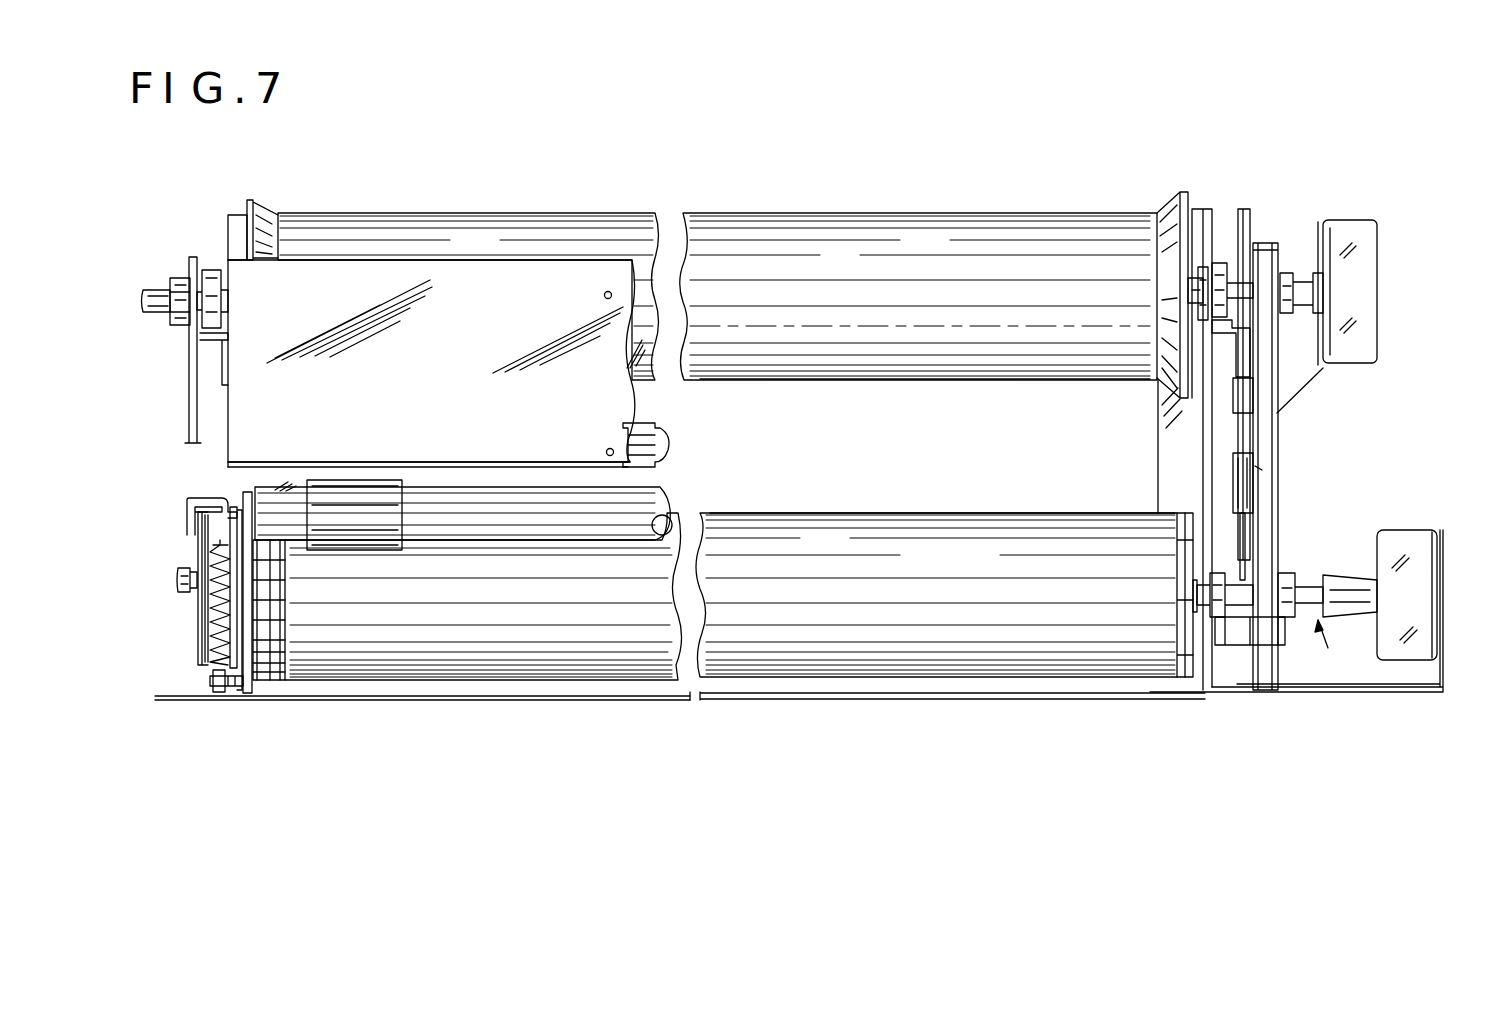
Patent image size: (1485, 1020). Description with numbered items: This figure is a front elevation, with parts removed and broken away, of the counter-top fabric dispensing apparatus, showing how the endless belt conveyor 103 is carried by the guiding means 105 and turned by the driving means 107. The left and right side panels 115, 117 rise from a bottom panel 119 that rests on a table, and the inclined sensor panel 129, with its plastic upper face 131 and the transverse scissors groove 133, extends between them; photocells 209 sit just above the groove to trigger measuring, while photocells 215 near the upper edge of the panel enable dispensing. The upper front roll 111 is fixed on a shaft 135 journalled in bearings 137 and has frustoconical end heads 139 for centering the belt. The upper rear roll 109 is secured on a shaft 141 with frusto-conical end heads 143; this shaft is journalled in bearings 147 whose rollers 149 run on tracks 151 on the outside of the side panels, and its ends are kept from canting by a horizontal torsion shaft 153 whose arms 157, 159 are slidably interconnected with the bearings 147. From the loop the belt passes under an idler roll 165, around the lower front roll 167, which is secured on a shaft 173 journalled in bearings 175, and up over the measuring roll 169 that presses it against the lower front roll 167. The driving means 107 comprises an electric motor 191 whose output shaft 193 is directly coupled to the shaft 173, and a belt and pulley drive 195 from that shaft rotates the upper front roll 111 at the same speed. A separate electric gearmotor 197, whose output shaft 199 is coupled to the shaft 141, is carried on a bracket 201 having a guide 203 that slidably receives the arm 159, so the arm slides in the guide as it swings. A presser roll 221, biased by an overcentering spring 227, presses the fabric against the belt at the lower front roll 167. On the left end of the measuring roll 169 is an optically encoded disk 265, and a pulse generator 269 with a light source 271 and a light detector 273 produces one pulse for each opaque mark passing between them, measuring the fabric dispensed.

The endless belt conveyor 103 is at (497, 656).
The guiding means 105 is at (1043, 680).
The driving means 107 is at (1341, 647).
The upper rear roll 109 is at (663, 220).
The upper front roll 111 is at (936, 382).
The left side panel 115 is at (215, 682).
The right side panel 117 is at (1262, 470).
The bottom panel 119 is at (895, 700).
The sensor panel 129 is at (452, 250).
The plastic upper face 131 is at (452, 366).
The slot or groove 133 is at (455, 459).
The shaft 135 is at (1200, 318).
The bearings 137 is at (1195, 285).
The frustoconical end heads 139 is at (1162, 200).
The shaft 141 is at (140, 298).
The frusto-conical end heads 143 is at (268, 200).
The bearings 147 is at (178, 326).
The rollers 149 is at (210, 268).
The tracks 151 is at (222, 342).
The horizontal torsion shaft 153 is at (1288, 630).
The arm 157 is at (190, 430).
The arm 159 is at (1245, 532).
The idler roll 165 is at (665, 426).
The lower front roll 167 is at (930, 512).
The measuring roll 169 is at (176, 583).
The shaft 173 is at (1196, 606).
The bearings 175 is at (1200, 590).
The electric motor 191 is at (1400, 528).
The output shaft 193 is at (1312, 588).
The belt and pulley drive 195 is at (1282, 436).
The electric gearmotor 197 is at (1378, 288).
The output shaft 199 is at (1305, 282).
The bracket 201 is at (1315, 222).
The guide 203 is at (1236, 476).
The photocell 209 is at (607, 449).
The photocell 215 is at (604, 293).
The presser roll 221 is at (318, 482).
The overcentering spring 227 is at (208, 628).
The optically encoded disk 265 is at (205, 636).
The pulse generator 269 is at (190, 500).
The light source 271 is at (198, 536).
The light detector 273 is at (214, 538).